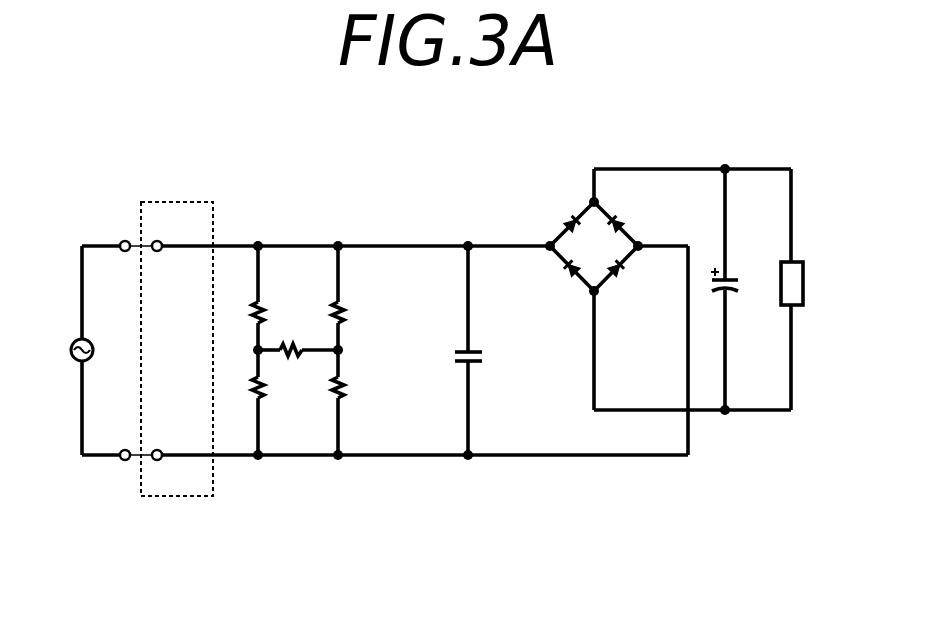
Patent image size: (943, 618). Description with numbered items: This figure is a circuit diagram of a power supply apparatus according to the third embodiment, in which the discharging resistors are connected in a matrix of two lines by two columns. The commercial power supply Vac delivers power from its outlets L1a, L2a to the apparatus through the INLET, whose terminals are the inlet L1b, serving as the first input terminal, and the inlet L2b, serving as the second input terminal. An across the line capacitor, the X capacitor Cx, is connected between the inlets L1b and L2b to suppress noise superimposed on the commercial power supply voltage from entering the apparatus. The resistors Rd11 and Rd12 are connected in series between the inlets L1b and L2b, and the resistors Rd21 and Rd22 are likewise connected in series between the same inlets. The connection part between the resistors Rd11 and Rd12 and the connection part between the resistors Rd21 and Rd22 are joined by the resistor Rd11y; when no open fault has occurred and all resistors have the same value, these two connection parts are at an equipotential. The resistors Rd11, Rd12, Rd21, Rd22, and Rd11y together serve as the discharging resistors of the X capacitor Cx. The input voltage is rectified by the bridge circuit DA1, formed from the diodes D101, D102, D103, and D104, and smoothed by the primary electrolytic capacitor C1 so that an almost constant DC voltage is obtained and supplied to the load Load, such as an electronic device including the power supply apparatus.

The commercial power supply Vac is at (53, 349).
The inlet INLET is at (173, 368).
The outlet L1a is at (107, 234).
The inlet (first input terminal) L1b is at (180, 234).
The outlet L2a is at (104, 470).
The inlet (second input terminal) L2b is at (180, 470).
The resistor Rd11 is at (295, 298).
The resistor Rd21 is at (376, 298).
The resistor Rd11y is at (302, 363).
The resistor Rd12 is at (293, 402).
The resistor Rd22 is at (373, 402).
The across the line capacitor (X capacitor) Cx is at (490, 350).
The bridge circuit DA1 is at (598, 249).
The diode D101 is at (538, 213).
The diode D102 is at (654, 213).
The diode D103 is at (644, 282).
The diode D104 is at (538, 281).
The primary electrolytic capacitor C1 is at (740, 271).
The load Load is at (822, 268).